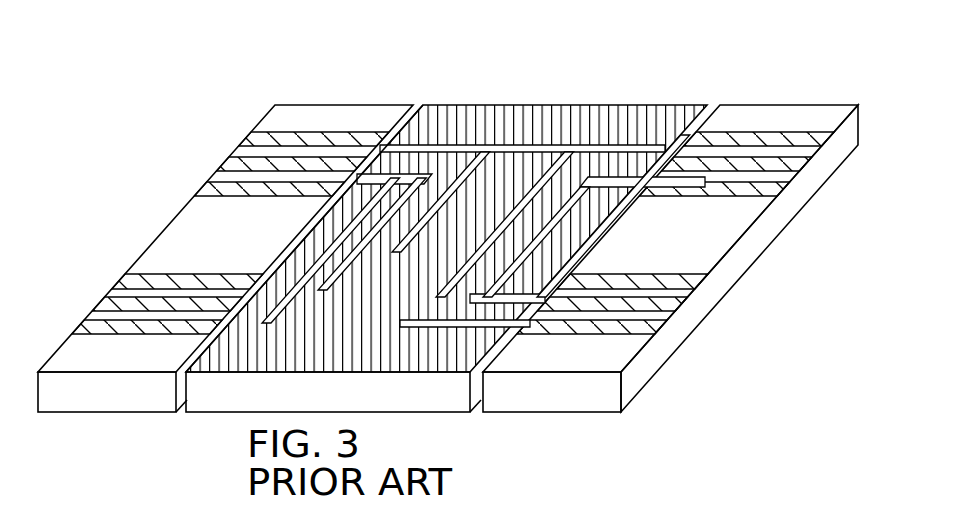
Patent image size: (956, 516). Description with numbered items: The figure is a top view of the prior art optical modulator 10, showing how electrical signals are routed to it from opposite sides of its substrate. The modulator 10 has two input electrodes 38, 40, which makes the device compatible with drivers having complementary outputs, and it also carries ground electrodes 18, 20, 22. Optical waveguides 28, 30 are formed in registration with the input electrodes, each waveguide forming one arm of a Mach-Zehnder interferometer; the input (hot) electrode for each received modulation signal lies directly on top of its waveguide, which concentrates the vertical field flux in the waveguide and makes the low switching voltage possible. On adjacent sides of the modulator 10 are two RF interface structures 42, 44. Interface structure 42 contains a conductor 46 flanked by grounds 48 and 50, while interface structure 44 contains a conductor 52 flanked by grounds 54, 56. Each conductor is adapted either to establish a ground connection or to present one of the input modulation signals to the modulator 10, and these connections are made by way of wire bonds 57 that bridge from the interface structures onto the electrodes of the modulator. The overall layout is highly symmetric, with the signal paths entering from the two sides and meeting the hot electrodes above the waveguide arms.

The optical modulator 10 is at (262, 96).
The ground electrode 18 is at (305, 262).
The ground electrode 20 is at (297, 278).
The ground electrode 22 is at (470, 262).
The optical waveguide 28 is at (340, 270).
The optical waveguide 30 is at (497, 232).
The input electrode 38 is at (408, 152).
The input electrode 40 is at (520, 210).
The RF interface structure 42 is at (95, 400).
The RF interface structure 44 is at (763, 240).
The conductor 46 is at (113, 293).
The ground 48 is at (82, 325).
The ground 50 is at (140, 272).
The conductor 52 is at (713, 165).
The ground 54 is at (776, 140).
The ground 56 is at (727, 194).
The wire bonds 57 is at (688, 134).